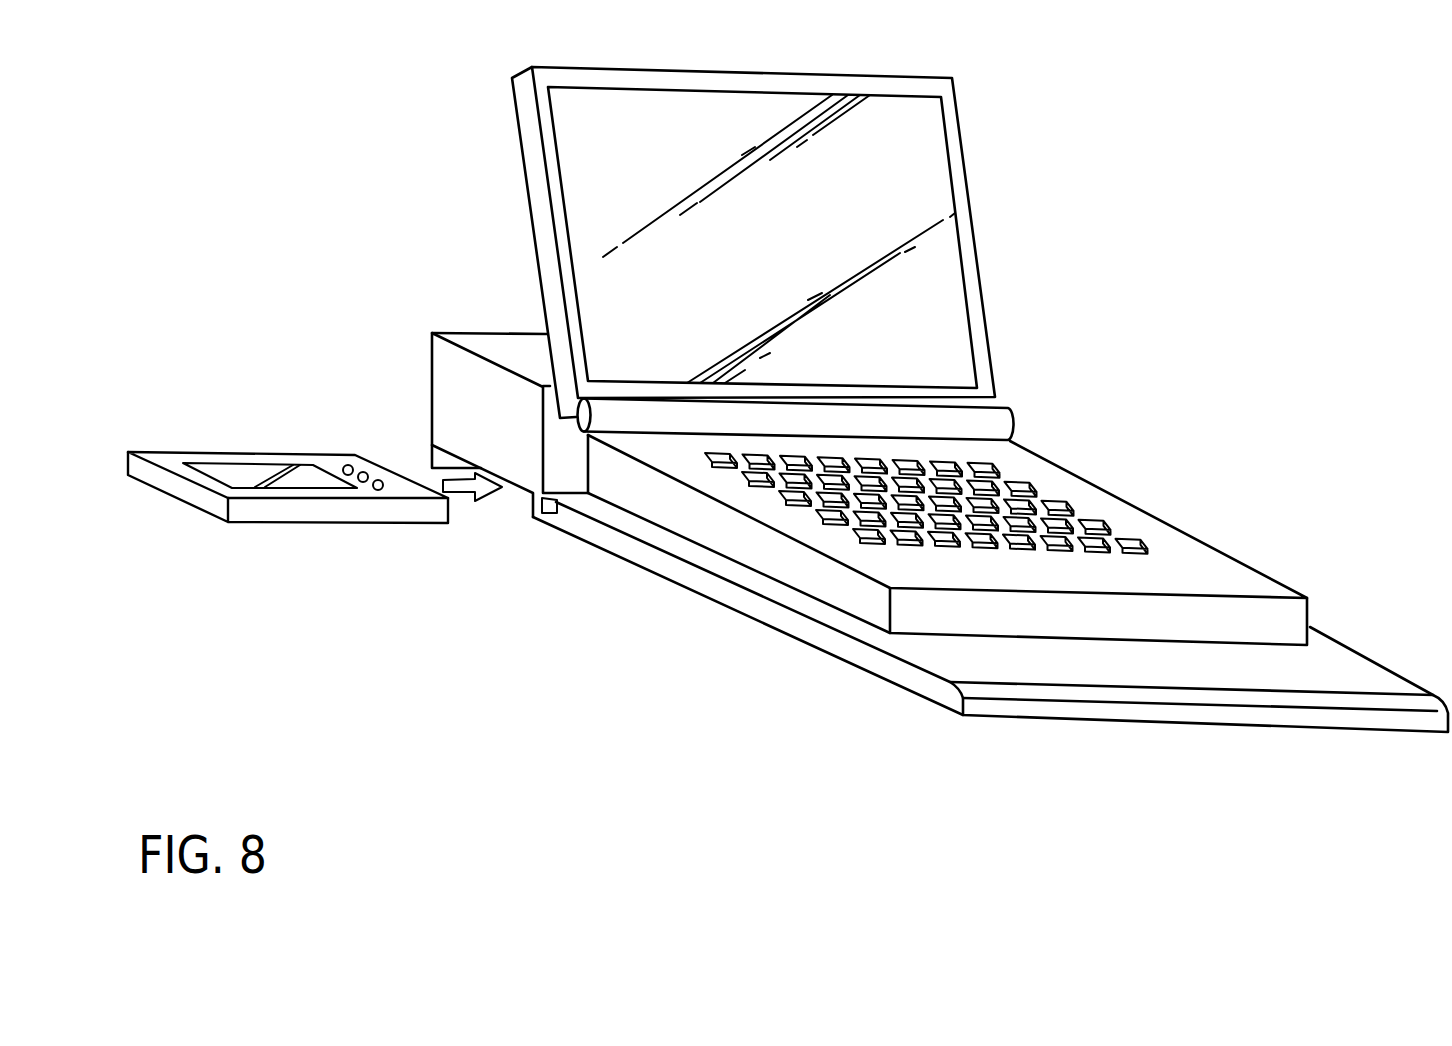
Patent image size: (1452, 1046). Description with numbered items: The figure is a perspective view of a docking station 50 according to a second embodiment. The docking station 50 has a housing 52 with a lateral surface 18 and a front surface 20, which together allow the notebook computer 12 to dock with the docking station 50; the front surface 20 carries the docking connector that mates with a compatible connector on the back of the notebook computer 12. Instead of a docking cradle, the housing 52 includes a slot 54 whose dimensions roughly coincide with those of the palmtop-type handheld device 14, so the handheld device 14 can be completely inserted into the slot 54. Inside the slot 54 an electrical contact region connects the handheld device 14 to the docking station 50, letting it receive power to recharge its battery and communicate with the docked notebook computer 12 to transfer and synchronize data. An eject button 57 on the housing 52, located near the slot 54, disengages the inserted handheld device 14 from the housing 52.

The notebook computer 12 is at (967, 150).
The palmtop-type handheld device 14 is at (177, 452).
The lateral surface 18 is at (1391, 683).
The front surface 20 is at (572, 473).
The docking station 50 is at (410, 328).
The housing 52 is at (488, 333).
The slot 54 is at (513, 490).
The eject button 57 is at (553, 518).